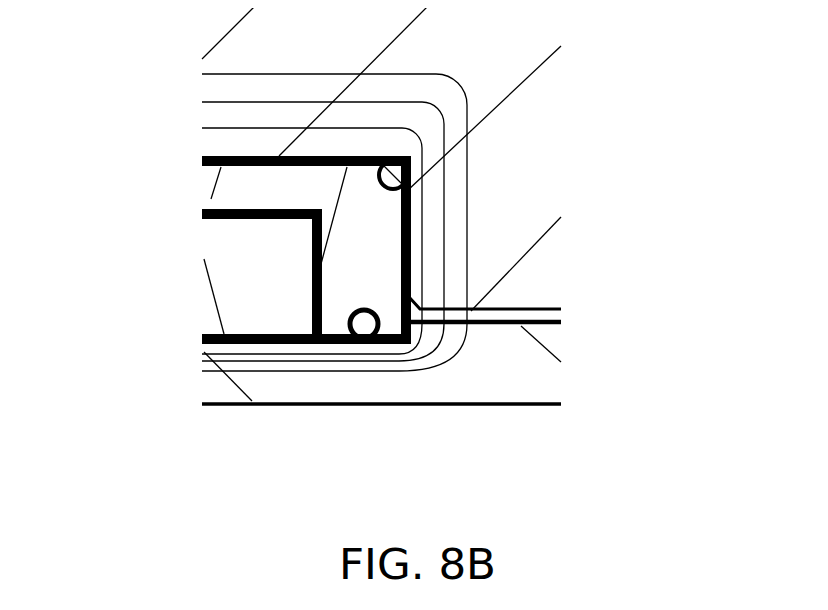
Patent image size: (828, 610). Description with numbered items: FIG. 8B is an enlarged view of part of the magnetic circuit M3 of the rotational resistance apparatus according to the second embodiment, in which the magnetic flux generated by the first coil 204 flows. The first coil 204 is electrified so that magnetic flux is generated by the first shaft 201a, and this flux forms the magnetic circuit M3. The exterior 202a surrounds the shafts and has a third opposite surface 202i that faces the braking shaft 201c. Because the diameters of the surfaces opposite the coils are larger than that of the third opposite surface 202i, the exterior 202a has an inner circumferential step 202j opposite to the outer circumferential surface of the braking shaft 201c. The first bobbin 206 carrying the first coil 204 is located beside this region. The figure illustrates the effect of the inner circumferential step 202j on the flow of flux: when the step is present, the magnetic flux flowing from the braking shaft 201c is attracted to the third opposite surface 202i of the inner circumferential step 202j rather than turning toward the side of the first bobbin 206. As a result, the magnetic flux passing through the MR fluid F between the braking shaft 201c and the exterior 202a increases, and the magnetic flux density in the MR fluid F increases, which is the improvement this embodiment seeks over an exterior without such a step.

The first shaft 201a is at (290, 31).
The braking shaft 201c is at (535, 270).
The exterior 202a is at (322, 382).
The third opposite surface 202i is at (502, 332).
The inner circumferential step 202j is at (500, 332).
The first coil 204 is at (290, 237).
The first bobbin 206 is at (290, 182).
The magnetic circuit M3 is at (230, 383).
The MR fluid F is at (557, 328).